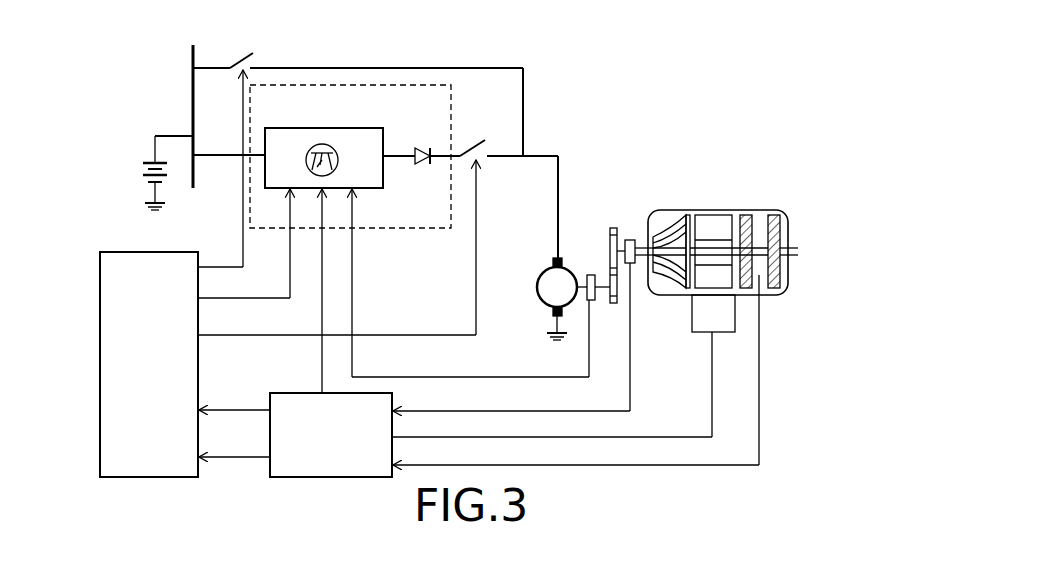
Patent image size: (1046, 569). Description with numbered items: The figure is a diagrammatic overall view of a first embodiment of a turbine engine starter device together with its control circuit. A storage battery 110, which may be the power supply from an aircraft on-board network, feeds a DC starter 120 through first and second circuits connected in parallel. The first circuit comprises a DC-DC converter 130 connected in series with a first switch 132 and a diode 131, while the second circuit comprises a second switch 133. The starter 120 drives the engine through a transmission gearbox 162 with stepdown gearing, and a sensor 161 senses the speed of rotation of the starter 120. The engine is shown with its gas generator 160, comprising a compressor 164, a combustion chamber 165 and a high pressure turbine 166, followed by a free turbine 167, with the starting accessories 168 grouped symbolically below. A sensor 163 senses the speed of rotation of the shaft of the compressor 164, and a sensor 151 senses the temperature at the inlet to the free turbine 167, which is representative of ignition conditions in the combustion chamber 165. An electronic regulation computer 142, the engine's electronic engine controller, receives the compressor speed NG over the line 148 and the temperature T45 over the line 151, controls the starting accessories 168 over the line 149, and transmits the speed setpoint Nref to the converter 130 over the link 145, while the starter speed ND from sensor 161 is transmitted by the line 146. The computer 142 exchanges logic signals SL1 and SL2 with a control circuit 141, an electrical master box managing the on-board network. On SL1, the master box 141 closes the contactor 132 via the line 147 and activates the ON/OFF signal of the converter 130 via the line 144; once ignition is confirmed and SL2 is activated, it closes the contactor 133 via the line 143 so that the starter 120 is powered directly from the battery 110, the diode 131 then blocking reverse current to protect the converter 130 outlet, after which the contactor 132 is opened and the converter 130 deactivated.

The storage battery 110 is at (143, 155).
The DC starter 120 is at (543, 279).
The DC-DC converter 130 is at (340, 85).
The diode 131 is at (420, 150).
The first switch 132 is at (463, 148).
The second switch 133 is at (241, 64).
The control circuit 141 is at (139, 387).
The electronic regulation computer 142 is at (315, 449).
The line 143 is at (240, 238).
The line 144 is at (290, 282).
The link 145 is at (322, 321).
The line 146 is at (352, 288).
The line 147 is at (437, 335).
The line 148 is at (630, 352).
The line 149 is at (665, 437).
The sensor 151 is at (759, 352).
The gas generator 160 is at (790, 222).
The sensor 161 is at (589, 275).
The transmission gearbox 162 is at (613, 230).
The sensor 163 is at (630, 240).
The compressor 164 is at (672, 224).
The combustion chamber 165 is at (703, 222).
The high pressure turbine 166 is at (748, 218).
The free turbine 167 is at (780, 249).
The starting accessories 168 is at (692, 318).